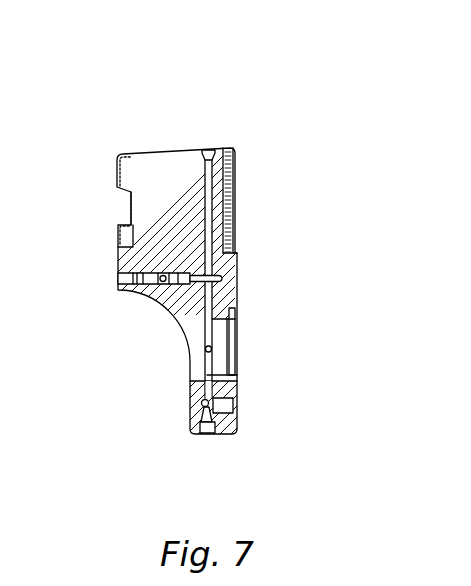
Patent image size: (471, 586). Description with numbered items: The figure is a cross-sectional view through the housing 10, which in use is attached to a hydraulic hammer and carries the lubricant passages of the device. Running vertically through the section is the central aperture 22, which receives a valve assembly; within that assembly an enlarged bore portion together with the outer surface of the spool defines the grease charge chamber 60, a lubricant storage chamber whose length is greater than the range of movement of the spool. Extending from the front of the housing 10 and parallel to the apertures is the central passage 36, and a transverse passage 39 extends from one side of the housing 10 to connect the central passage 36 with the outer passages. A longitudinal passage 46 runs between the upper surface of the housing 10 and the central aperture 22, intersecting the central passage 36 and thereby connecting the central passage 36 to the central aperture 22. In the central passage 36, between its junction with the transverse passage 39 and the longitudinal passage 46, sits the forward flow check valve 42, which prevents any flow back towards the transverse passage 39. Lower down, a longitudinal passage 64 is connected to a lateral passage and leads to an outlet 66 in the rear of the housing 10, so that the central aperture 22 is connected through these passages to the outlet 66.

The housing 10 is at (238, 117).
The central aperture 22 is at (222, 323).
The central passage 36 is at (127, 289).
The transverse passage 39 is at (167, 275).
The forward flow check valve 42 is at (177, 283).
The longitudinal passage 46 is at (207, 193).
The grease charge chamber 60 is at (211, 332).
The longitudinal passage 64 is at (210, 393).
The outlet 66 is at (227, 407).